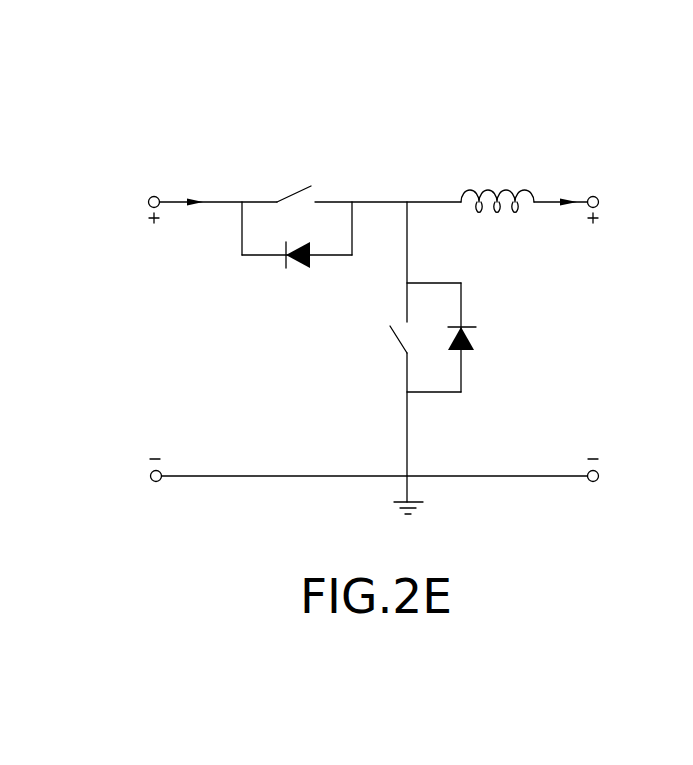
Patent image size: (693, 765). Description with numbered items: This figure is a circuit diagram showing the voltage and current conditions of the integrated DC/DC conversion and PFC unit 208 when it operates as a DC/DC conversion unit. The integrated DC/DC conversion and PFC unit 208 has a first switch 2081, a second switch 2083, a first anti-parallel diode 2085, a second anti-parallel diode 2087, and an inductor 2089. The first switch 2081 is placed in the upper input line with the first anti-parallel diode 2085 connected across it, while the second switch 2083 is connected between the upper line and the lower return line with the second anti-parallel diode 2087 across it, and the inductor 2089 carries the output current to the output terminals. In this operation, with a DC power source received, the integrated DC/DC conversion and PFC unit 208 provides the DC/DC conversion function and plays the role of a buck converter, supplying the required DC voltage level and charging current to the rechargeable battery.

The integrated DC/DC conversion and PFC unit 208 is at (394, 43).
The first switch 2081 is at (315, 190).
The second switch 2083 is at (401, 322).
The first anti-parallel diode 2085 is at (296, 267).
The second anti-parallel diode 2087 is at (476, 336).
The inductor 2089 is at (495, 178).